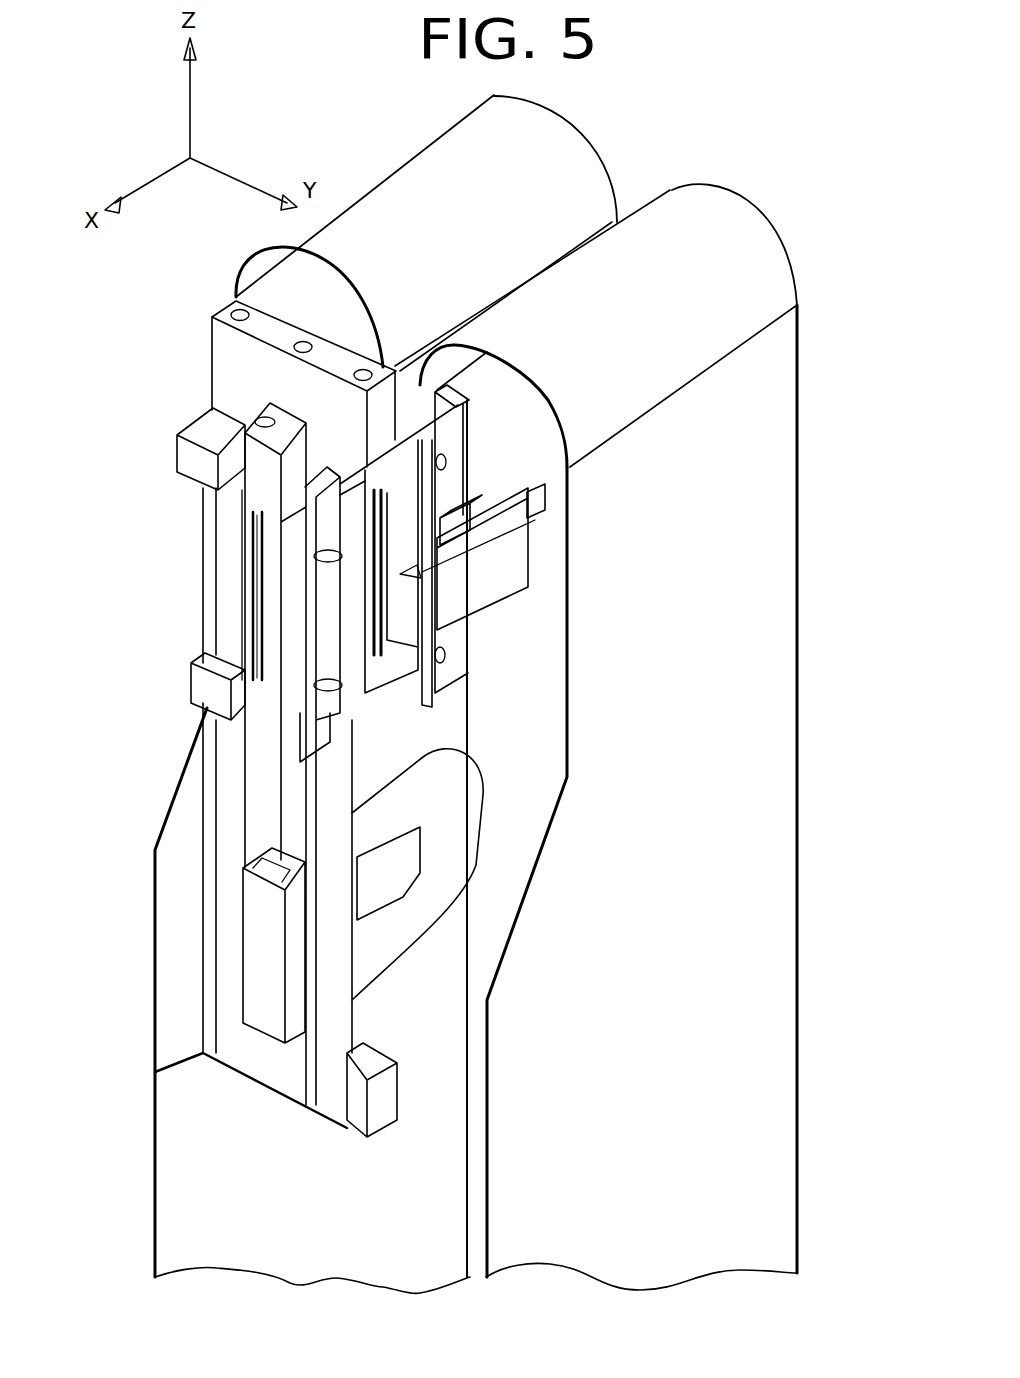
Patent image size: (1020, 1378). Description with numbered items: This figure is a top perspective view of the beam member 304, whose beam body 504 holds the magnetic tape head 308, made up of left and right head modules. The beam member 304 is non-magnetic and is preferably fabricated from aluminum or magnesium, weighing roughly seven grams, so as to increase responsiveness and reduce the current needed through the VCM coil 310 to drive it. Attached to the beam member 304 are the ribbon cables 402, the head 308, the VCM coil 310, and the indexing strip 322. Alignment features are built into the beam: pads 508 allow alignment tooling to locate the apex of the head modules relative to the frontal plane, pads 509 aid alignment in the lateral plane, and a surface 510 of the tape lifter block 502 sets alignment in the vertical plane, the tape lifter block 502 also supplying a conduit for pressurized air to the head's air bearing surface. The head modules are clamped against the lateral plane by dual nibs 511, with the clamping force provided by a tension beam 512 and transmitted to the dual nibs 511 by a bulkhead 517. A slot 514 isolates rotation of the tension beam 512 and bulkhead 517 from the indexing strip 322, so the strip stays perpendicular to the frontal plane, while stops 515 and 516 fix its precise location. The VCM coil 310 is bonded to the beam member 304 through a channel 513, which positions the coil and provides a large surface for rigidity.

The ribbon cables 402 is at (547, 165).
The indexing strip 322 is at (275, 597).
The tape lifter block 502 is at (262, 420).
The pads 508 is at (197, 458).
The pads 509 is at (227, 465).
The surface 510 is at (245, 482).
The dual nibs 511 is at (310, 552).
The beam body 504 is at (288, 795).
The channel 513 is at (265, 966).
The beam member 304 is at (200, 1060).
The stop 516 is at (462, 447).
The stop 515 is at (467, 513).
The bulkhead 517 is at (443, 563).
The slot 514 is at (470, 607).
The head 308 is at (230, 613).
The tension beam 512 is at (365, 713).
The VCM coil 310 is at (437, 793).